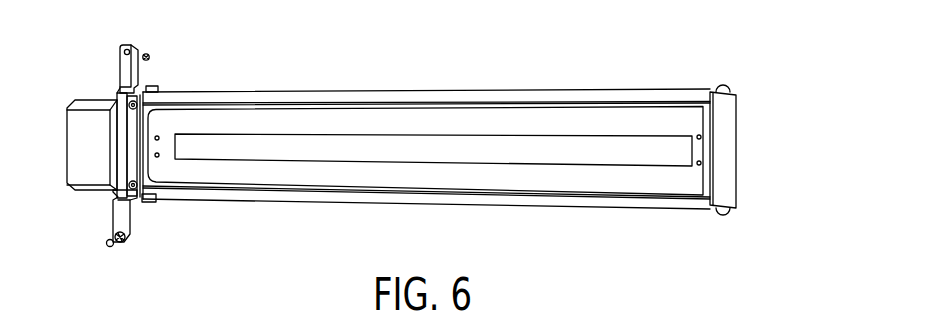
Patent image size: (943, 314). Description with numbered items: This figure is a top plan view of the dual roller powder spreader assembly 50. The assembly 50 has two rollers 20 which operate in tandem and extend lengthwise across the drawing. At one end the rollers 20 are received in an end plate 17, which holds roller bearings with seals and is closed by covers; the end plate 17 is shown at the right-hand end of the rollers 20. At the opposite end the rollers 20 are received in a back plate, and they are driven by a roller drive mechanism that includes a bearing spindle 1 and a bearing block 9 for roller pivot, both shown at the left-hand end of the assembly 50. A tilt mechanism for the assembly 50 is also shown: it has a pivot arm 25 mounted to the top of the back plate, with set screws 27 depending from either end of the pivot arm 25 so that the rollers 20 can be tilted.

The dual roller powder spreader assembly 50 is at (748, 87).
The end plate 17 is at (737, 149).
The rollers 20 is at (453, 117).
The bearing block 9 is at (83, 163).
The bearing spindle 1 is at (118, 133).
The pivot arm 25 is at (128, 64).
The set screws 27 is at (147, 55).